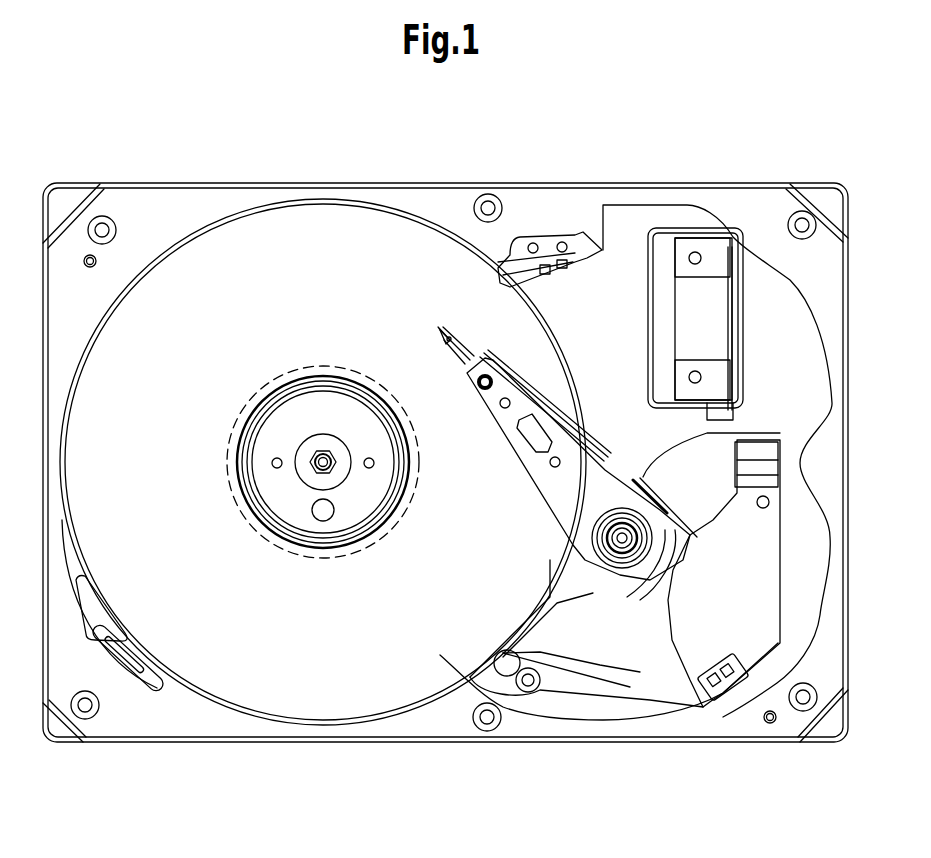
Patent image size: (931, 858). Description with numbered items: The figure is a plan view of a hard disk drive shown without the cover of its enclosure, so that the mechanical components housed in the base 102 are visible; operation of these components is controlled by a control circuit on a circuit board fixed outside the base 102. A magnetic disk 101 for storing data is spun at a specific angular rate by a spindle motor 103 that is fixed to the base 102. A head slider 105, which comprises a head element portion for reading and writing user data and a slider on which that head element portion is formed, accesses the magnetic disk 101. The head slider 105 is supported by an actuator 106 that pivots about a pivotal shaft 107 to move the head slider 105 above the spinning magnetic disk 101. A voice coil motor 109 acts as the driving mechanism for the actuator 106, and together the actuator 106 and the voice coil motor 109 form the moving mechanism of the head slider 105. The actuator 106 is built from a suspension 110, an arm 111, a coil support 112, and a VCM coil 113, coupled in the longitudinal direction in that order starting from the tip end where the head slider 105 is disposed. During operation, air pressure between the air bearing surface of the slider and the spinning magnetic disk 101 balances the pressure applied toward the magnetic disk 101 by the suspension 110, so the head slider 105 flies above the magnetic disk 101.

The magnetic disk 101 is at (557, 357).
The base 102 is at (370, 743).
The spindle motor 103 is at (307, 558).
The head slider 105 is at (448, 332).
The actuator 106 is at (491, 441).
The pivotal shaft 107 is at (597, 545).
The voice coil motor 109 is at (566, 698).
The suspension 110 is at (466, 368).
The arm 111 is at (548, 505).
The coil support 112 is at (783, 600).
The VCM coil 113 is at (652, 655).